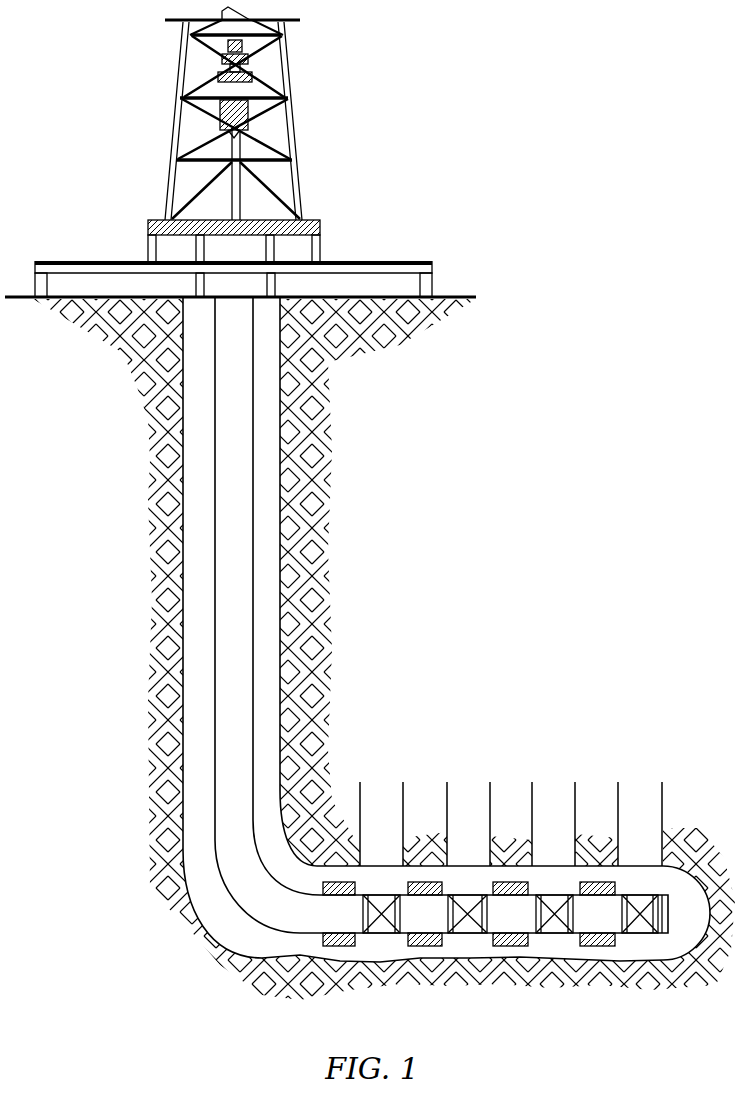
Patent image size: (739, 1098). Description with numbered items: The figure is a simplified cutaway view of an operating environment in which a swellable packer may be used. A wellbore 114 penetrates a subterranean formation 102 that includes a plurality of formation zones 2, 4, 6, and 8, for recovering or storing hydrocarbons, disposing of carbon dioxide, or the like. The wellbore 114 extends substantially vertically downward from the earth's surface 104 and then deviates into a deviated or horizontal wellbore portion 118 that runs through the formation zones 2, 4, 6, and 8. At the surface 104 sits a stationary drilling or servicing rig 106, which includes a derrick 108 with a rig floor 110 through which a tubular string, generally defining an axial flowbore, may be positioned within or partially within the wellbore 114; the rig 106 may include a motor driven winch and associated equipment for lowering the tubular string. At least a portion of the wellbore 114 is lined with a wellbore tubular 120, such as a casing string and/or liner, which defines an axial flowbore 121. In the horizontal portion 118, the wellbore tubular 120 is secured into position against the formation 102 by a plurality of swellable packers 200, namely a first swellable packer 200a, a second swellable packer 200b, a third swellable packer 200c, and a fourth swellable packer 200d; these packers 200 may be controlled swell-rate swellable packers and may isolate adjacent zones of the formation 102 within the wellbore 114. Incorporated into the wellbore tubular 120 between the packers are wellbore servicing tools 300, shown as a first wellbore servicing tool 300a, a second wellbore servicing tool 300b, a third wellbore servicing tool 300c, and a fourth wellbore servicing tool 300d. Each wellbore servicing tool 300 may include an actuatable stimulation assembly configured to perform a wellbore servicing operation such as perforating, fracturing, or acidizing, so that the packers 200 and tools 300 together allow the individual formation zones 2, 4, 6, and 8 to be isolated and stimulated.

The subterranean formation 102 is at (330, 368).
The earth's surface 104 is at (456, 297).
The drilling or servicing rig 106 is at (268, 135).
The derrick 108 is at (178, 66).
The rig floor 110 is at (117, 262).
The wellbore 114 is at (200, 416).
The deviated or horizontal wellbore portion 118 is at (511, 782).
The wellbore tubular 120 is at (215, 686).
The axial flowbore 121 is at (242, 634).
The swellable packers 200 is at (467, 908).
The first swellable packer 200a is at (599, 948).
The second swellable packer 200b is at (512, 948).
The third swellable packer 200c is at (425, 948).
The fourth swellable packer 200d is at (340, 948).
The wellbore servicing tool 300 is at (510, 924).
The first wellbore servicing tool 300a is at (640, 936).
The second wellbore servicing tool 300b is at (556, 936).
The third wellbore servicing tool 300c is at (468, 936).
The fourth wellbore servicing tool 300d is at (384, 936).
The formation zone 8 is at (381, 824).
The formation zone 6 is at (468, 824).
The formation zone 4 is at (553, 824).
The formation zone 2 is at (640, 824).